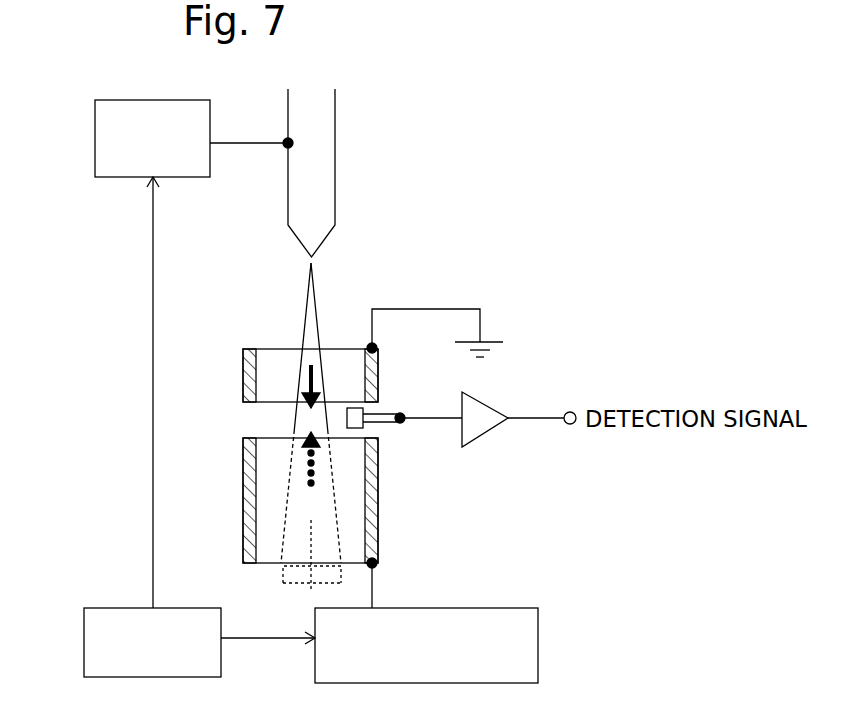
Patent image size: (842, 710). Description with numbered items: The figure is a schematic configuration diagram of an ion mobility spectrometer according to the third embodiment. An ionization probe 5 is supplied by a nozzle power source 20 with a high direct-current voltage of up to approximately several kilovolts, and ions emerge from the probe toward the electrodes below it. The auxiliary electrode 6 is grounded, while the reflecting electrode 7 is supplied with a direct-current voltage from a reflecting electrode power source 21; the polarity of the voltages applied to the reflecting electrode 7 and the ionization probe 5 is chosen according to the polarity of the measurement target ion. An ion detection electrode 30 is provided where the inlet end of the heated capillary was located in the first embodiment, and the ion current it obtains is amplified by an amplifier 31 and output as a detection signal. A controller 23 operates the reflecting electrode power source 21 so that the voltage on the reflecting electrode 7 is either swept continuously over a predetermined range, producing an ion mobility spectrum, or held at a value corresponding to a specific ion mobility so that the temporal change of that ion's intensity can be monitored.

The ionization probe 5 is at (335, 192).
The auxiliary electrode 6 is at (243, 367).
The reflecting electrode 7 is at (243, 488).
The nozzle power source 20 is at (180, 99).
The reflecting electrode power source 21 is at (538, 632).
The controller 23 is at (84, 632).
The ion detection electrode 30 is at (368, 430).
The amplifier 31 is at (485, 437).